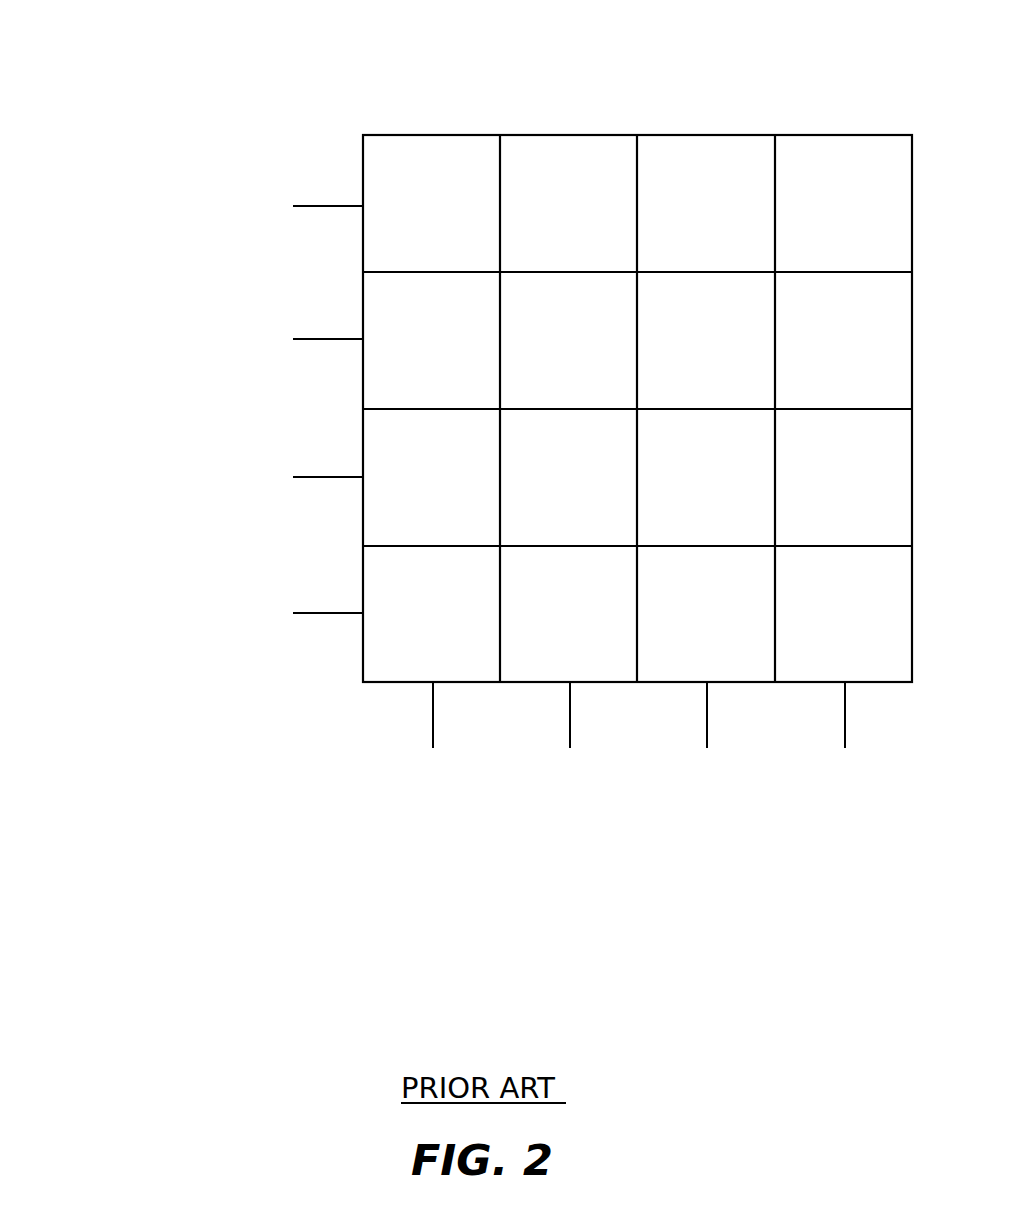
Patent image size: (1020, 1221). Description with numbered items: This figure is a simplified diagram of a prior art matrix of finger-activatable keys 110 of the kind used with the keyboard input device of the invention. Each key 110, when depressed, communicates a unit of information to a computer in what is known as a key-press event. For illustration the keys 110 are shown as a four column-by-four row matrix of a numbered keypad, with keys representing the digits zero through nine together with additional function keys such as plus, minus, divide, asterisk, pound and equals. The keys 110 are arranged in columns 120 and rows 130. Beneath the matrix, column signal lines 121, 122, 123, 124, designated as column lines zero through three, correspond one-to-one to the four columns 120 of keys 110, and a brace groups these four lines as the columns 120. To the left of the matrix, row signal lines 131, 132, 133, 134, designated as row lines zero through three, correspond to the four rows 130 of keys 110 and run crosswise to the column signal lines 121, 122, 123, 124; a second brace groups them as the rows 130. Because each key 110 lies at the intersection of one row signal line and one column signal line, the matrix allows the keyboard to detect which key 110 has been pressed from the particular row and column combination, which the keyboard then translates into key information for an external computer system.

The finger-activatable keys 110 is at (797, 35).
The columns 120 is at (639, 831).
The column signal line 121 is at (438, 784).
The column signal line 122 is at (569, 784).
The column signal line 123 is at (711, 784).
The column signal line 124 is at (846, 784).
The rows 130 is at (207, 407).
The row signal line 131 is at (250, 208).
The row signal line 132 is at (250, 341).
The row signal line 133 is at (250, 478).
The row signal line 134 is at (250, 614).